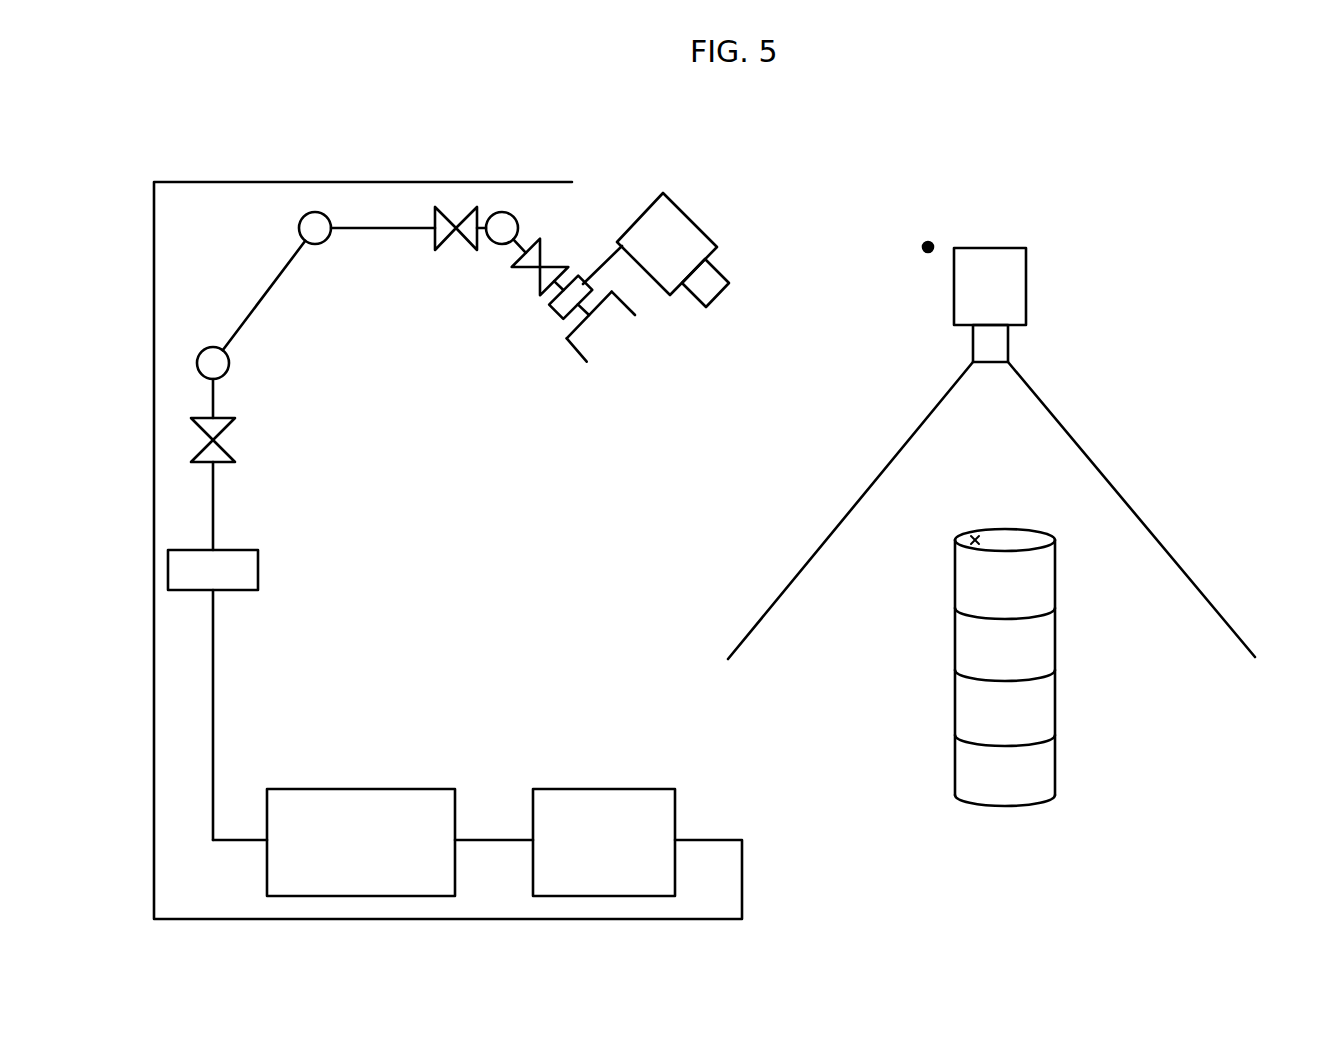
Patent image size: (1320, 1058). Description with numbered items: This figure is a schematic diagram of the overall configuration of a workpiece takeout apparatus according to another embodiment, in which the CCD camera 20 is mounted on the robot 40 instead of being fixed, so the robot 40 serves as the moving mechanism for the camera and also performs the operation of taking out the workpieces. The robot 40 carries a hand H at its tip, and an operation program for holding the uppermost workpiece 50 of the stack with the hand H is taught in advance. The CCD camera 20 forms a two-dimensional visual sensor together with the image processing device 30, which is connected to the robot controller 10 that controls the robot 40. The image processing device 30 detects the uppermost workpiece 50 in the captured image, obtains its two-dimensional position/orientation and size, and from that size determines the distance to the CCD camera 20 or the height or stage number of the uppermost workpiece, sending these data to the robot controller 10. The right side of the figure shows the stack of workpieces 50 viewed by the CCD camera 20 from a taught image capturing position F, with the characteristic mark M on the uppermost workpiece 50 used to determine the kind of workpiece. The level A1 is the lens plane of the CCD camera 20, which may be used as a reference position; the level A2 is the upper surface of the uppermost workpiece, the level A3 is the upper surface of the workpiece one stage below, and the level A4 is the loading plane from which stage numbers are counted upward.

The robot controller 10 is at (360, 789).
The CCD camera 20 is at (718, 236).
The image processing device 30 is at (600, 789).
The robot 40 is at (228, 490).
The workpiece 50 is at (1070, 632).
The hand H is at (569, 358).
The image capturing position F is at (943, 237).
The mark M is at (975, 526).
The lens plane level A1 is at (972, 362).
The uppermost level A2 is at (953, 543).
The third stage level A3 is at (953, 603).
The loading plane A4 is at (953, 790).